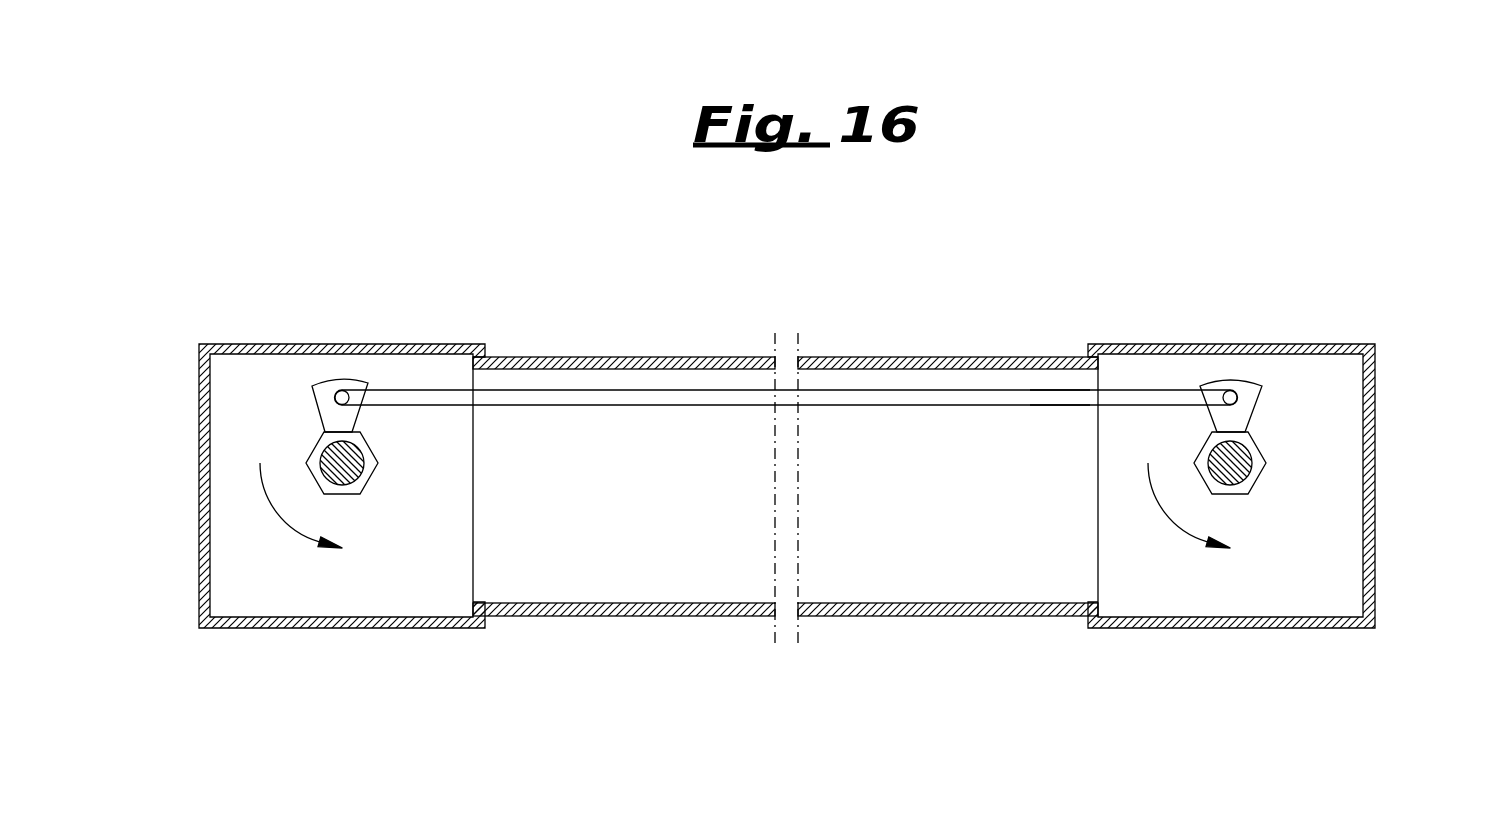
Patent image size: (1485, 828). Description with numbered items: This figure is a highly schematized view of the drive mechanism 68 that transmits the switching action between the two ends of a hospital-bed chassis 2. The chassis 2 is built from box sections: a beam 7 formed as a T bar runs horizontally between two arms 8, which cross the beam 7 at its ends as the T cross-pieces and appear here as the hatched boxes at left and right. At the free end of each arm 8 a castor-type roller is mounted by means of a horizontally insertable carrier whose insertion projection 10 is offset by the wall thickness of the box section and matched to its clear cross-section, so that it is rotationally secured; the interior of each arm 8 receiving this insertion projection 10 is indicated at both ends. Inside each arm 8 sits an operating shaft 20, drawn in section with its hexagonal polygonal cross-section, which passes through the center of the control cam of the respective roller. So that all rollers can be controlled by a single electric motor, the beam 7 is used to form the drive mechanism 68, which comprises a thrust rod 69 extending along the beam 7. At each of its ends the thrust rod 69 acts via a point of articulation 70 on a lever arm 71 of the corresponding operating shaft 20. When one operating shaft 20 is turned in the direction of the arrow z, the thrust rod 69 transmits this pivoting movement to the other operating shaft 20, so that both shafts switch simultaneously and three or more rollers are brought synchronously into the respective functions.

The chassis 2 is at (526, 345).
The beam 7 is at (597, 357).
The arms 8 is at (256, 344).
The insertion projection 10 is at (232, 482).
The operating shaft 20 is at (313, 447).
The drive mechanism 68 is at (989, 378).
The thrust rod 69 is at (1055, 398).
The points of articulation 70 is at (331, 388).
The lever arm 71 is at (358, 384).